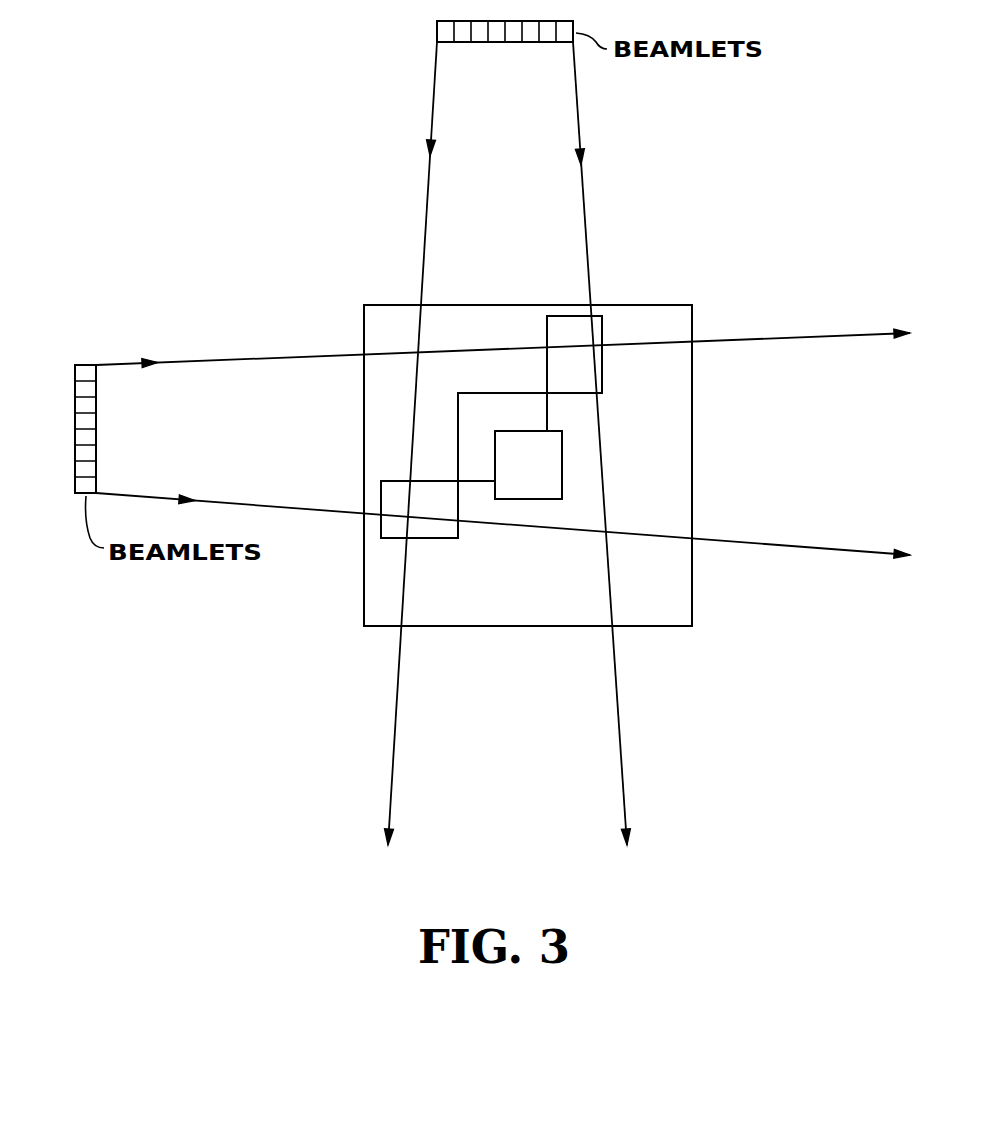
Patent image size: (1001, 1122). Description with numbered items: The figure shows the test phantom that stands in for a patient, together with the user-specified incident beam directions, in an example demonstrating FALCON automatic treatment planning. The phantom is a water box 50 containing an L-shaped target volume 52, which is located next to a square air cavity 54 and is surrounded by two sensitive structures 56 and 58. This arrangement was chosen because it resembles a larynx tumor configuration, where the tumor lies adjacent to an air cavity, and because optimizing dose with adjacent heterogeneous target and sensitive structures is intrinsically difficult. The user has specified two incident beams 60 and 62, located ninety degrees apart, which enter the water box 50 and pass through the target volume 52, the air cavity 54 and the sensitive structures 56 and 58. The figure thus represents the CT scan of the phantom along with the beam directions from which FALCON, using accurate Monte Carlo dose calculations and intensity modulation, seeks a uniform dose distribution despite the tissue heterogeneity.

The water box 50 is at (693, 589).
The L-shaped target volume 52 is at (478, 420).
The square air cavity 54 is at (548, 475).
The sensitive structure 56 is at (398, 503).
The sensitive structure 58 is at (571, 331).
The incident beam 60 is at (228, 358).
The incident beam 62 is at (584, 135).